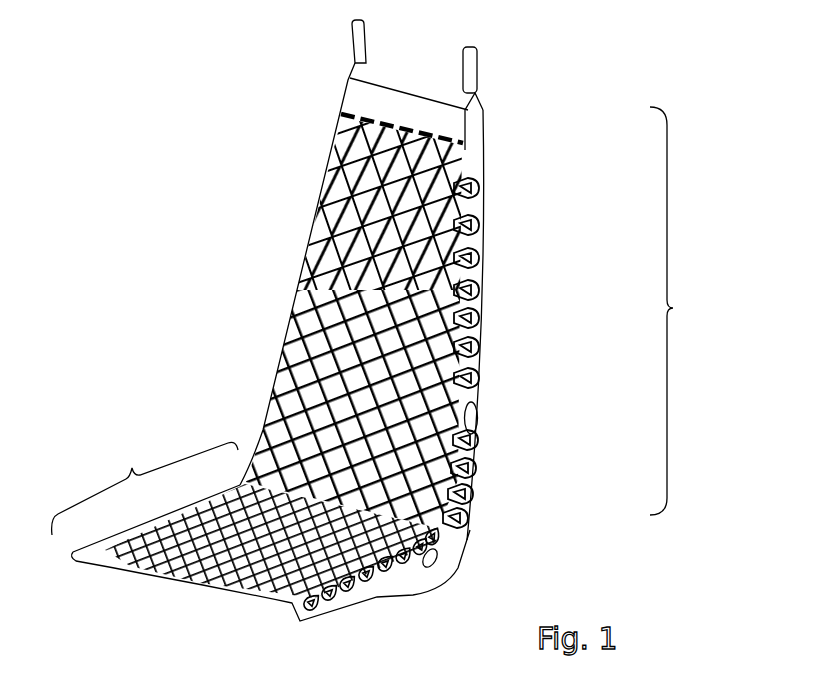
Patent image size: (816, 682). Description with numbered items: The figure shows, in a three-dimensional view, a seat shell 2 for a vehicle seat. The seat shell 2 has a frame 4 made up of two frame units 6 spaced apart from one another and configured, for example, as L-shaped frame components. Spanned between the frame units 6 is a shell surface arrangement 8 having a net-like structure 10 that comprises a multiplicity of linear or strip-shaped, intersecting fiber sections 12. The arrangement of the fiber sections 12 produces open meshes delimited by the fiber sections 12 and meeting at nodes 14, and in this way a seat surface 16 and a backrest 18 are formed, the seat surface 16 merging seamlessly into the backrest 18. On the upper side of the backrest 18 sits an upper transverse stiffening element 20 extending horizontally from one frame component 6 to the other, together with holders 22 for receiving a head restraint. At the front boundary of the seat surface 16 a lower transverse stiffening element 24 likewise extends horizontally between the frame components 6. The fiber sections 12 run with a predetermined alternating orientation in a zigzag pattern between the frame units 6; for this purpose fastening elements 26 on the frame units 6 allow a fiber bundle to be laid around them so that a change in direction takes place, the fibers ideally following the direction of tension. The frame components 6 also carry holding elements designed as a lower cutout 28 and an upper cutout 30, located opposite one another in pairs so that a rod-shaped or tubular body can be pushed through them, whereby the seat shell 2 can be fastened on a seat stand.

The seat shell 2 is at (550, 50).
The frame 4 is at (495, 380).
The frame units 6 is at (283, 347).
The shell surface arrangement 8 is at (200, 567).
The net-like structure 10 is at (445, 218).
The fiber sections 12 is at (460, 163).
The nodes 14 is at (396, 170).
The seat surface 16 is at (145, 488).
The backrest 18 is at (683, 311).
The upper transverse stiffening element 20 is at (365, 98).
The holders 22 is at (355, 33).
The lower transverse stiffening element 24 is at (143, 570).
The fastening elements 26 is at (335, 600).
The lower cutout 28 is at (437, 552).
The upper cutout 30 is at (470, 418).